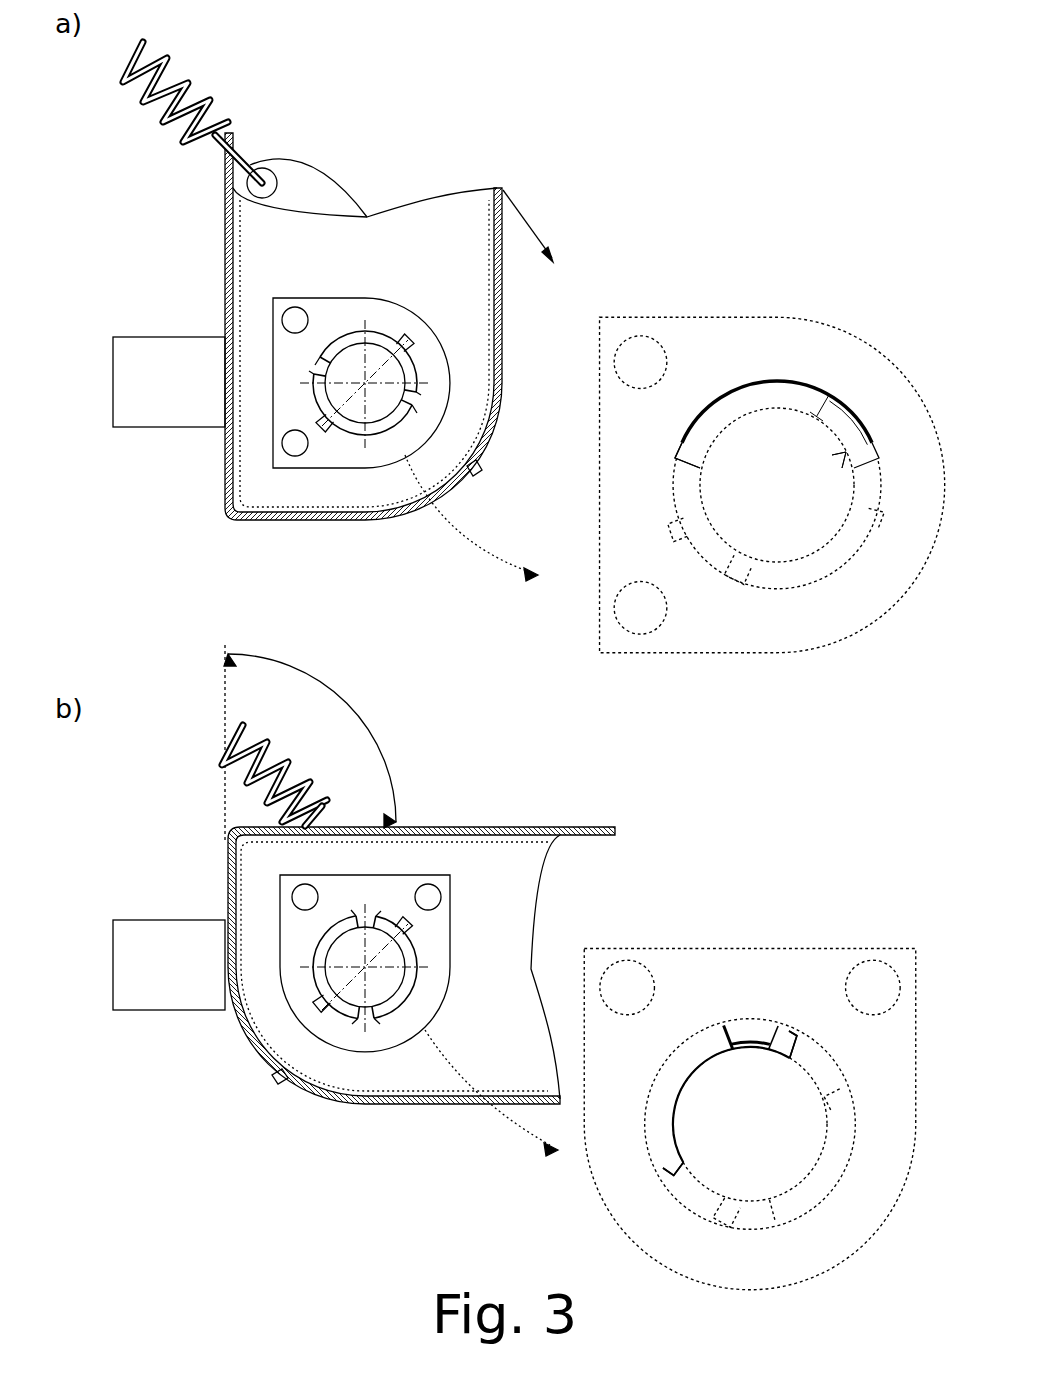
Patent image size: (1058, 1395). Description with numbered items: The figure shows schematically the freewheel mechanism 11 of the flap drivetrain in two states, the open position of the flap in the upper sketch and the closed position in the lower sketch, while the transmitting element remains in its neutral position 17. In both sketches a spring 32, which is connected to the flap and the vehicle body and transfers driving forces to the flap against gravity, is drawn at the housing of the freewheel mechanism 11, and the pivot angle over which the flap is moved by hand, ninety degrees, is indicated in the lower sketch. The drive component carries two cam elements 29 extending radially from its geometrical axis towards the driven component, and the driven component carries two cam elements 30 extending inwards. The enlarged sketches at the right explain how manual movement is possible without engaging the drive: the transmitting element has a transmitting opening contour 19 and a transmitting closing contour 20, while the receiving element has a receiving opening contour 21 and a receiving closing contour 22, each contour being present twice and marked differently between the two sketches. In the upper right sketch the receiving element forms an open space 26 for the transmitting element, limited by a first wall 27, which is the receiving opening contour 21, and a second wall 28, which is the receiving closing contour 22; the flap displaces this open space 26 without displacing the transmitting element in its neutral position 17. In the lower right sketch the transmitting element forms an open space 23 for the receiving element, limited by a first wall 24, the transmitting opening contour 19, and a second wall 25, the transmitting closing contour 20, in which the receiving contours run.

The freewheel mechanism 11 is at (458, 320).
The neutral position 17 is at (400, 347).
The transmitting opening contour 19 is at (872, 440).
The transmitting closing contour 20 is at (825, 400).
The receiving opening contour 21 is at (846, 452).
The receiving closing contour 22 is at (680, 437).
The open space 23 is at (660, 1127).
The first wall 24 is at (793, 1044).
The second wall 25 is at (673, 1169).
The open space 26 is at (760, 437).
The first wall 27 is at (839, 460).
The second wall 28 is at (687, 455).
The cam elements 29 is at (408, 340).
The cam elements 30 is at (416, 400).
The spring 32 is at (165, 130).